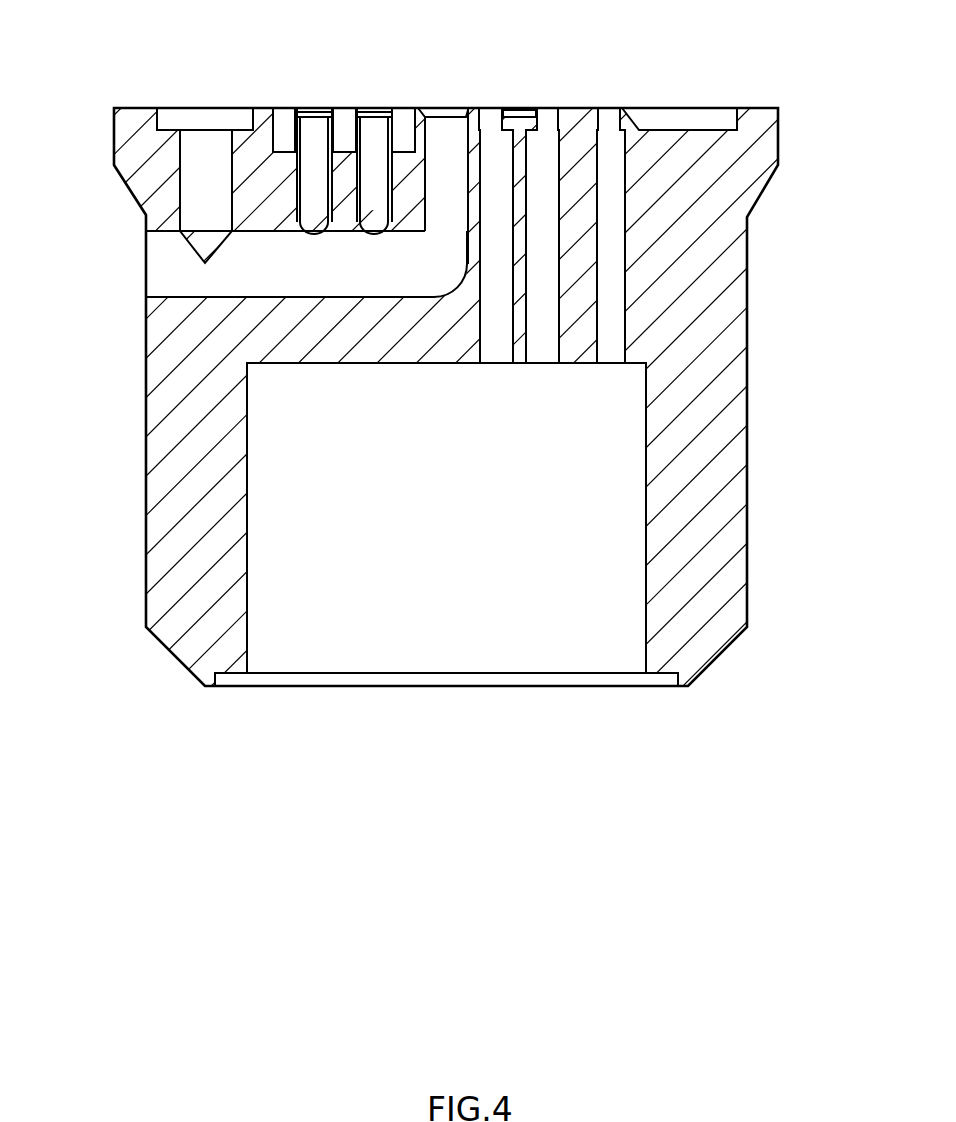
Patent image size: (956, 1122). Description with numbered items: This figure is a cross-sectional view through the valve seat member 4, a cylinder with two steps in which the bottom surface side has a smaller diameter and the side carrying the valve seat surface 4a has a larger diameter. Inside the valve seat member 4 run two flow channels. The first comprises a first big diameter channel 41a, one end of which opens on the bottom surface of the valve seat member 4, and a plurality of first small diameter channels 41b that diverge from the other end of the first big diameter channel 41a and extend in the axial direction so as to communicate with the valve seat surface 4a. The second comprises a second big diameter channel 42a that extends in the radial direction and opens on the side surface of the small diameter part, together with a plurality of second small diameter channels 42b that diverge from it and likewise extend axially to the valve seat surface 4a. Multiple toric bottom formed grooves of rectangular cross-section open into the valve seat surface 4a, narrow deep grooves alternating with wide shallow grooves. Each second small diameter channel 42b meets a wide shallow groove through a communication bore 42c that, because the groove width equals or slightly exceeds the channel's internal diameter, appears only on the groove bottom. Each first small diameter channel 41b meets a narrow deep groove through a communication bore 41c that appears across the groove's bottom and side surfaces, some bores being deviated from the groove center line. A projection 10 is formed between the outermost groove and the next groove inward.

The valve seat member 4 is at (173, 700).
The valve seat surface 4a is at (418, 110).
The projection 10 is at (333, 110).
The first big diameter channel 41a is at (472, 556).
The first small diameter channels 41b is at (605, 352).
The communication bore 41c is at (489, 140).
The second big diameter channel 42a is at (287, 284).
The second small diameter channels 42b is at (440, 224).
The communication bore 42c is at (166, 128).